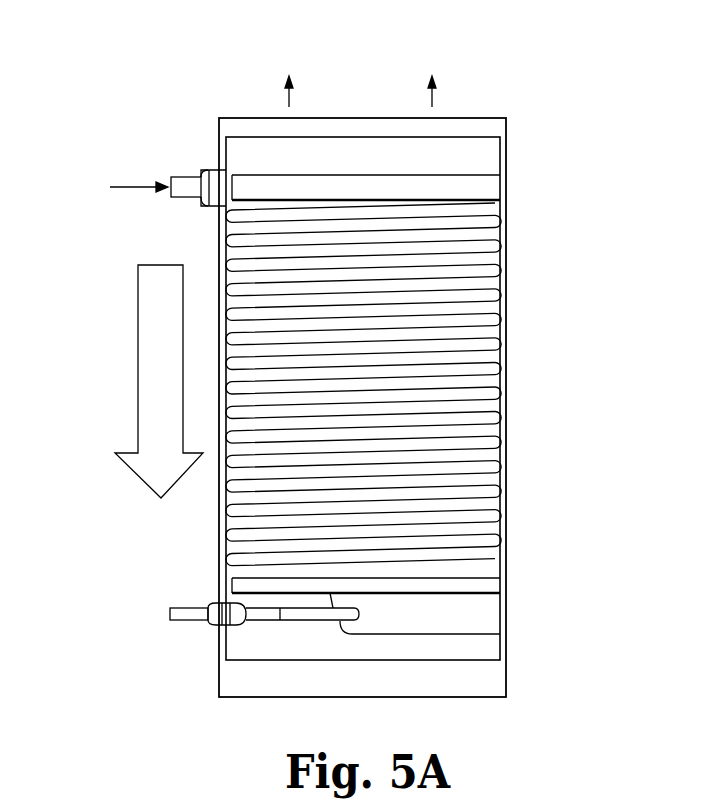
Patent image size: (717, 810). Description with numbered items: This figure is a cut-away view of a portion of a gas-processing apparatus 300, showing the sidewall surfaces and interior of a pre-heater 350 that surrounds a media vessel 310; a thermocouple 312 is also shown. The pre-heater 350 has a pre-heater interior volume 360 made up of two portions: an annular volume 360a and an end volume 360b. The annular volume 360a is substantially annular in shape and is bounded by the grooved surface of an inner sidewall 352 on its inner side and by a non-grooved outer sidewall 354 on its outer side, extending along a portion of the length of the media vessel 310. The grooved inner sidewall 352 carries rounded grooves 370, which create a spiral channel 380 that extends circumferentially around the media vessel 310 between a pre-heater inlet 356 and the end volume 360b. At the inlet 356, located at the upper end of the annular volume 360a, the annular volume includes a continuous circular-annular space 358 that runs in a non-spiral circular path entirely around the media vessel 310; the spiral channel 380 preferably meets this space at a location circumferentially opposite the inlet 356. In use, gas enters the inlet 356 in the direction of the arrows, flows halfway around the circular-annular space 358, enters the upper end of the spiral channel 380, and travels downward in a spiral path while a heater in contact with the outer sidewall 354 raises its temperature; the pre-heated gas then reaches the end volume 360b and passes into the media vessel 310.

The gas-processing apparatus 300 is at (88, 333).
The media vessel 310 is at (502, 120).
The thermocouple 312 is at (170, 612).
The pre-heater 350 is at (550, 405).
The inner sidewall 352 is at (482, 251).
The outer sidewall 354 is at (219, 246).
The pre-heater inlet 356 is at (183, 177).
The circular-annular space 358 is at (500, 191).
The pre-heater interior volume 360 is at (500, 354).
The annular volume 360a is at (500, 313).
The end volume 360b is at (480, 617).
The rounded grooves 370 is at (500, 277).
The spiral channel 380 is at (226, 487).